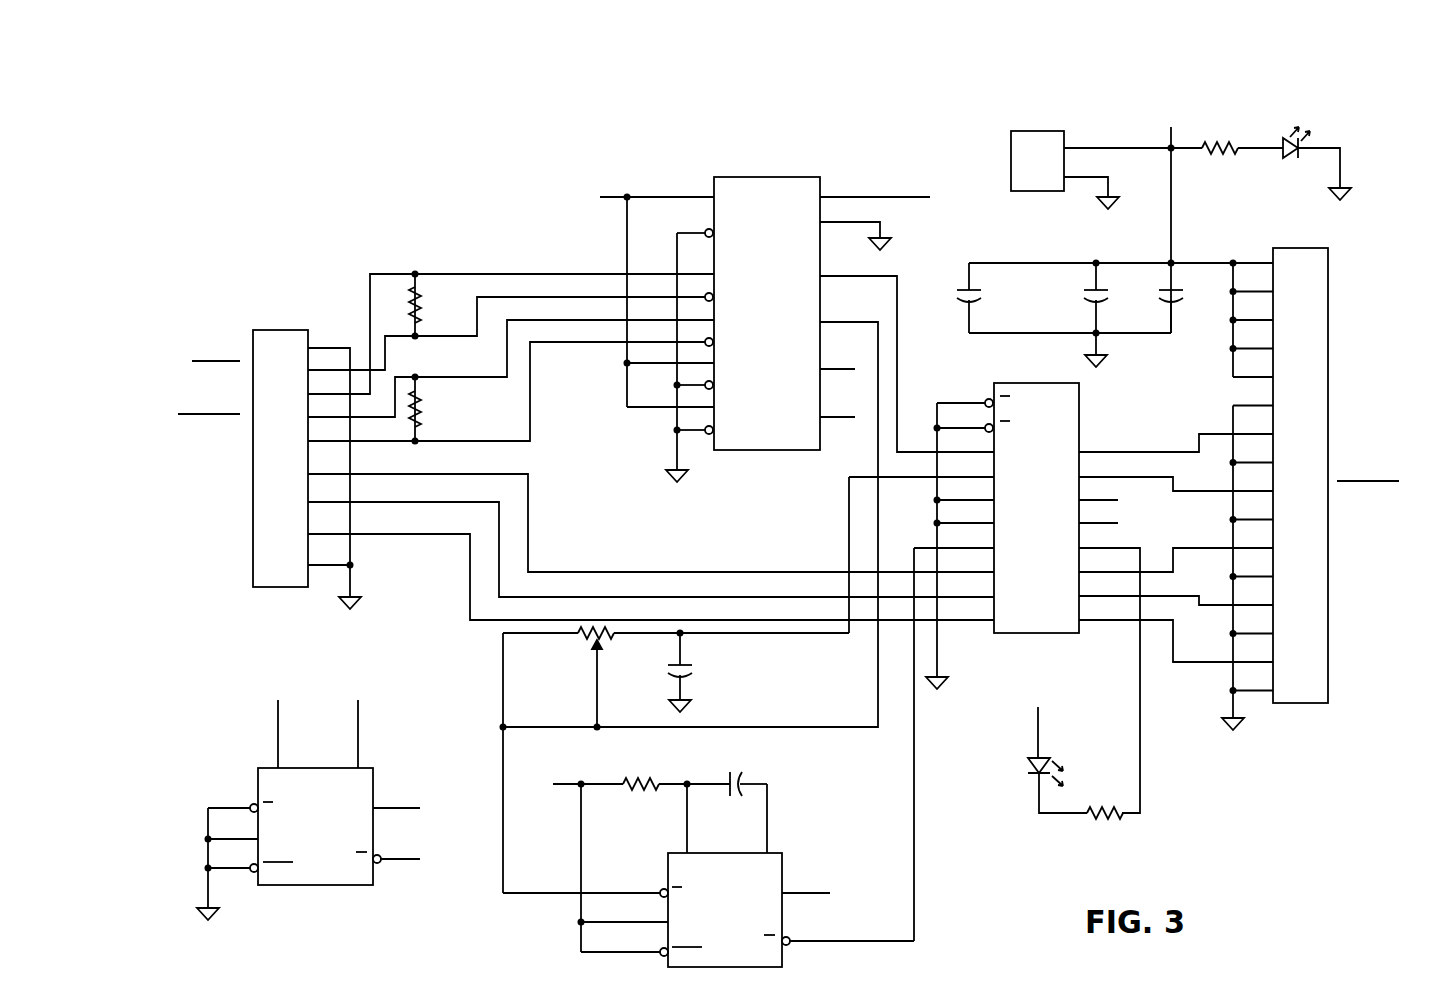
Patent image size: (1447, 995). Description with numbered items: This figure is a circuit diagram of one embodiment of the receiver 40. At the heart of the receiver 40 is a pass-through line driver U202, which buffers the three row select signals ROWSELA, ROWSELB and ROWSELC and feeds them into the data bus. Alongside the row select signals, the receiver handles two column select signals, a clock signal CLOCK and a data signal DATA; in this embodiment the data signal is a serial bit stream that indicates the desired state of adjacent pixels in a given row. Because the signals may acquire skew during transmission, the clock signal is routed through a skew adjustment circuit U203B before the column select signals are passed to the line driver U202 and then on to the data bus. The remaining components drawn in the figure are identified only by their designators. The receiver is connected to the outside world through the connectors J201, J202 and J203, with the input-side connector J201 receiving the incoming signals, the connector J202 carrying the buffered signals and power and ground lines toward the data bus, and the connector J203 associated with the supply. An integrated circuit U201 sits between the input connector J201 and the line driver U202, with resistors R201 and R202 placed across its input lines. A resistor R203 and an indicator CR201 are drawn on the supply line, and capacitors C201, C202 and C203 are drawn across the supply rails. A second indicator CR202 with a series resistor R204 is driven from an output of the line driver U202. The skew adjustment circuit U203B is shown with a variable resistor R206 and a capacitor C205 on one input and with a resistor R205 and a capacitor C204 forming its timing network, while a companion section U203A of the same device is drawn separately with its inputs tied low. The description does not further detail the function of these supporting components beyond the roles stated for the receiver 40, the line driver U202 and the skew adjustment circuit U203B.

The receiver 40 is at (429, 203).
The input connector J201 is at (567, 447).
The termination resistor R201 is at (439, 305).
The termination resistor R202 is at (439, 409).
The differential line receiver DS26LS32C U201 is at (748, 432).
The power connector J203 is at (1106, 215).
The LED current limiting resistor R203 is at (1242, 127).
The power indicator LED CR201 is at (1308, 139).
The bulk filter capacitor C201 is at (1110, 298).
The bypass capacitor C202 is at (1119, 314).
The bypass capacitor C203 is at (1194, 297).
The output connector J202 is at (1258, 478).
The pass-through line driver U202 is at (994, 641).
The data indicator LED CR202 is at (1031, 744).
The LED current limiting resistor R204 is at (1105, 793).
The variable resistor R206 is at (675, 760).
The timing capacitor C205 is at (707, 671).
The timing resistor R205 is at (622, 802).
The timing capacitor C204 is at (767, 766).
The skew adjustment circuit U203B is at (708, 875).
The monostable multivibrator 74HC423 section A U203A is at (322, 810).